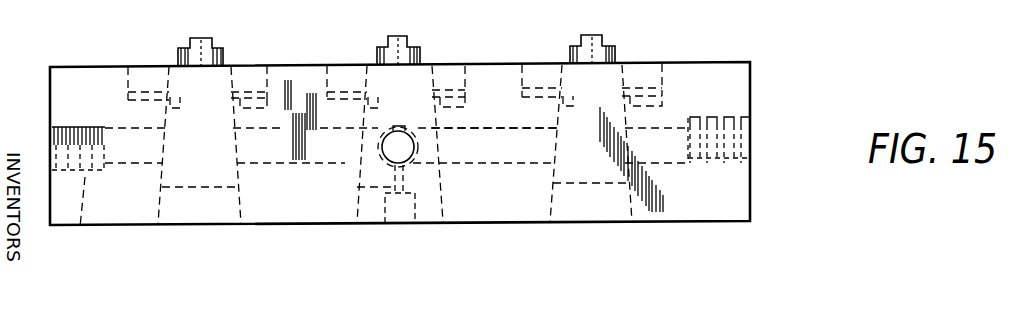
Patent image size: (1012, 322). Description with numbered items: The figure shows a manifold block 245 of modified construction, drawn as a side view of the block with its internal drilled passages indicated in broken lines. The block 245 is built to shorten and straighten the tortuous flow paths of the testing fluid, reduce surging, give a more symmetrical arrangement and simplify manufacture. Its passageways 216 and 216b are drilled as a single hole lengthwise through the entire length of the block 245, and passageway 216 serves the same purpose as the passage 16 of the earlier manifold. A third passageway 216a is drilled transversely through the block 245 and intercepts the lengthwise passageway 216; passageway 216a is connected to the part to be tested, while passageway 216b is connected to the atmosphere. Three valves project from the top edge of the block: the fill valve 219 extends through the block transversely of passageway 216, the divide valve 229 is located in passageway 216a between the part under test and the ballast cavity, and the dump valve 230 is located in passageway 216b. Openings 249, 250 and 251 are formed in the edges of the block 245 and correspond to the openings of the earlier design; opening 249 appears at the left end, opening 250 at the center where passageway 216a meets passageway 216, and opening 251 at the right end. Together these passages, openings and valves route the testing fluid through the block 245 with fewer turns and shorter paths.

The passage 16 is at (385, 6).
The passageway 216 is at (325, 153).
The third passageway 216a is at (403, 147).
The passageway 216b is at (516, 112).
The fill valve 219 is at (204, 47).
The divide valve 229 is at (404, 46).
The dump valve 230 is at (592, 36).
The manifold block 245 is at (800, 55).
The opening 249 is at (79, 227).
The opening 250 is at (402, 128).
The opening 251 is at (752, 121).